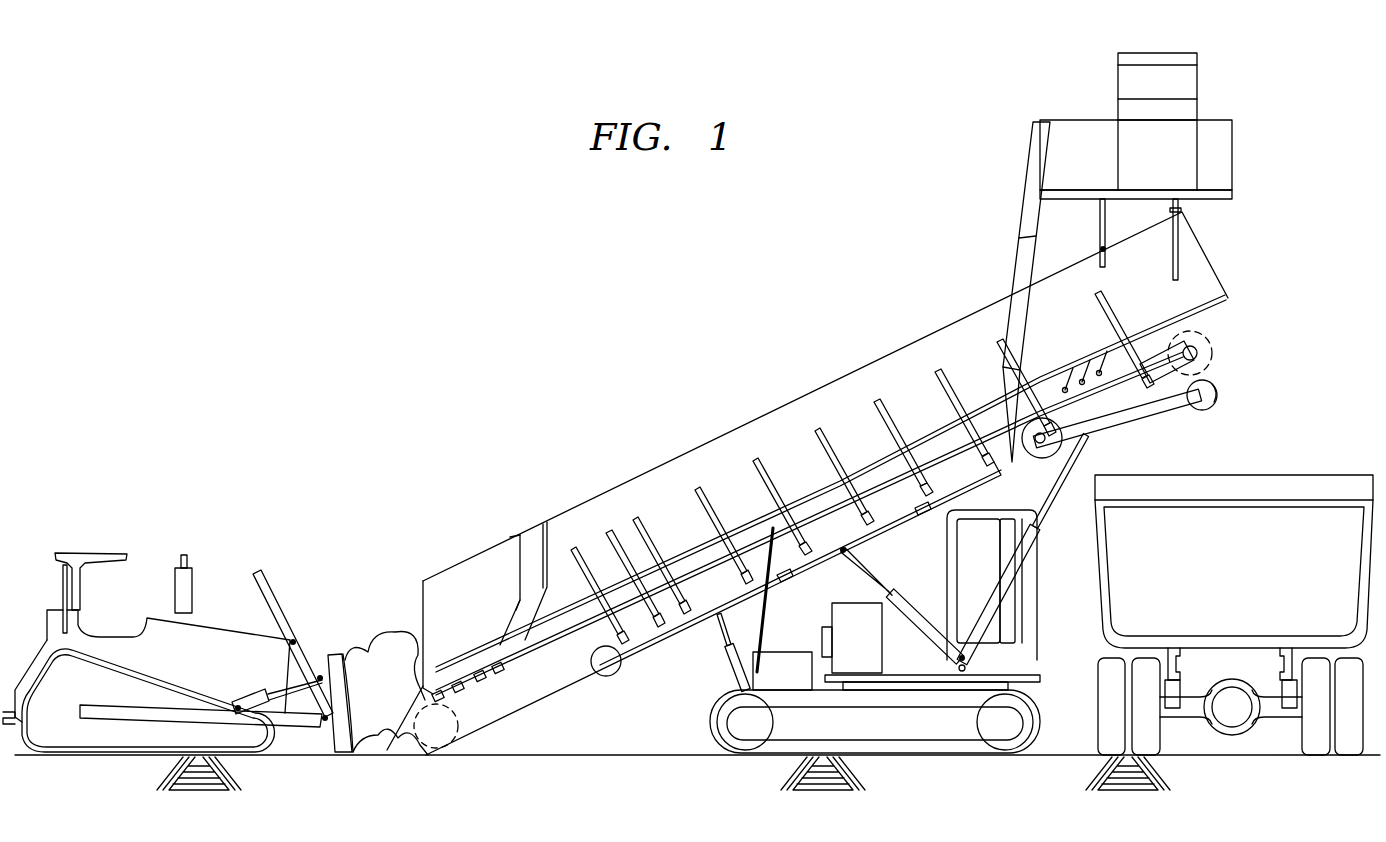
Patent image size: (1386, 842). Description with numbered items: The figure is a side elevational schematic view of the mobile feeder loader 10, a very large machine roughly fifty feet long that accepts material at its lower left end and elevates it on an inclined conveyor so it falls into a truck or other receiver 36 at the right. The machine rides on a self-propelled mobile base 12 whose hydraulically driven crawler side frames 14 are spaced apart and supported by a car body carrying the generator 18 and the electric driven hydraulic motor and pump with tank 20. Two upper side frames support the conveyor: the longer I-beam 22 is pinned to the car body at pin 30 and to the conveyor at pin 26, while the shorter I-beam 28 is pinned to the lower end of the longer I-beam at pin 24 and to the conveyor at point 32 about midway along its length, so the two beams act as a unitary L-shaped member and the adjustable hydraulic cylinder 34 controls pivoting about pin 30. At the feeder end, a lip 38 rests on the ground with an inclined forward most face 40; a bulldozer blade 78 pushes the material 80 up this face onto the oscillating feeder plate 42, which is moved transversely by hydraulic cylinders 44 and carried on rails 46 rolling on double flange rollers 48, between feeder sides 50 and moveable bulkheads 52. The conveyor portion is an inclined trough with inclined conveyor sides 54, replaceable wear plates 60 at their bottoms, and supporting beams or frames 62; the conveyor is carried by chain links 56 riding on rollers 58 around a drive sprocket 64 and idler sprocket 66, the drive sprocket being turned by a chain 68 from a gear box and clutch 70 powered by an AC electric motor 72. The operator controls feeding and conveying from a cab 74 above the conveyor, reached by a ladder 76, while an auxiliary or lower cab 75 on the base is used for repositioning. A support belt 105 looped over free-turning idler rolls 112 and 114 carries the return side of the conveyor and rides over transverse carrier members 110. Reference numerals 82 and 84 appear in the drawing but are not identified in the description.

The mobile feeder loader 10 is at (808, 352).
The self-propelled mobile base 12 is at (859, 631).
The crawler side frames 14 is at (882, 727).
The generator 18 is at (870, 640).
The electric driven hydraulic motor and pump with tank 20 is at (798, 679).
The longer I-beam 22 is at (1026, 549).
The pin 24 is at (965, 655).
The pin 26 is at (1092, 432).
The shorter I-beam 28 is at (916, 572).
The pin 30 is at (965, 668).
The pin point 32 is at (843, 552).
The adjustable hydraulic cylinder 34 is at (722, 650).
The truck or other receiver 36 is at (1248, 592).
The lip 38 is at (360, 754).
The inclined forward most face 40 is at (393, 668).
The feeder plate 42 is at (482, 668).
The hydraulic cylinders 44 is at (470, 700).
The rails 46 is at (500, 650).
The double flange rollers 48 is at (527, 668).
The feeder sides 50 is at (513, 577).
The moveable bulkheads 52 is at (532, 520).
The inclined conveyor sides 54 is at (777, 451).
The chain links 56 is at (757, 533).
The rollers 58 is at (1099, 371).
The replaceable wear plates 60 is at (702, 558).
The beams or frames 62 is at (820, 429).
The drive sprocket 64 is at (1210, 338).
The idler sprocket 66 is at (402, 755).
The chain 68 is at (1215, 388).
The gear box and clutch 70 is at (1147, 397).
The AC electric motor 72 is at (1042, 503).
The cab 74 is at (1212, 105).
The auxiliary or lower cab 75 is at (1033, 612).
The ladder 76 is at (1028, 168).
The bulldozer blade 78 is at (332, 655).
The material 80 is at (195, 676).
The chute wall 82 is at (516, 610).
The chute top edge 84 is at (510, 537).
The support belt 105 is at (645, 665).
The transverse carrier members 110 is at (790, 585).
The idler roll 112 is at (1218, 400).
The idler roll 114 is at (598, 682).